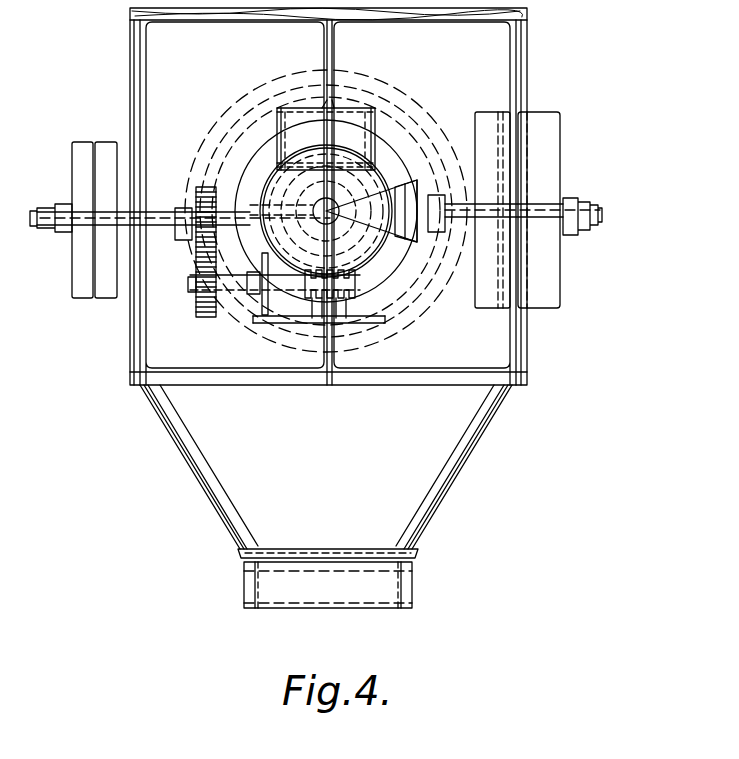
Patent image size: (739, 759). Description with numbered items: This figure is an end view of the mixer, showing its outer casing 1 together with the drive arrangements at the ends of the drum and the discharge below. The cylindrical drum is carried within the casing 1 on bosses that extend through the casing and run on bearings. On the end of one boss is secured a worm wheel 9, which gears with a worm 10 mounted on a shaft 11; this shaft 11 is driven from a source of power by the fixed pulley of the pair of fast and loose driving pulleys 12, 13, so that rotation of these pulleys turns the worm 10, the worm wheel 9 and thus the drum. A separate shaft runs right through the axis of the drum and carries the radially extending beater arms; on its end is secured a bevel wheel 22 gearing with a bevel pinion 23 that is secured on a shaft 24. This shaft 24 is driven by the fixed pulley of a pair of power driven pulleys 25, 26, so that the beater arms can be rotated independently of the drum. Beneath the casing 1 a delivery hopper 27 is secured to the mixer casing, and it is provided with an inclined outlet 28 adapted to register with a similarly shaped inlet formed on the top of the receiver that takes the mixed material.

The outer casing 1 is at (526, 45).
The worm wheel 9 is at (383, 167).
The worm 10 is at (340, 302).
The shaft 11 is at (413, 243).
The driving pulley 12 is at (107, 145).
The driving pulley 13 is at (80, 145).
The bevel wheel 22 is at (378, 137).
The bevel pinion 23 is at (416, 183).
The shaft 24 is at (602, 210).
The power driven pulley 25 is at (550, 130).
The power driven pulley 26 is at (490, 112).
The delivery hopper 27 is at (450, 455).
The inclined outlet 28 is at (336, 606).